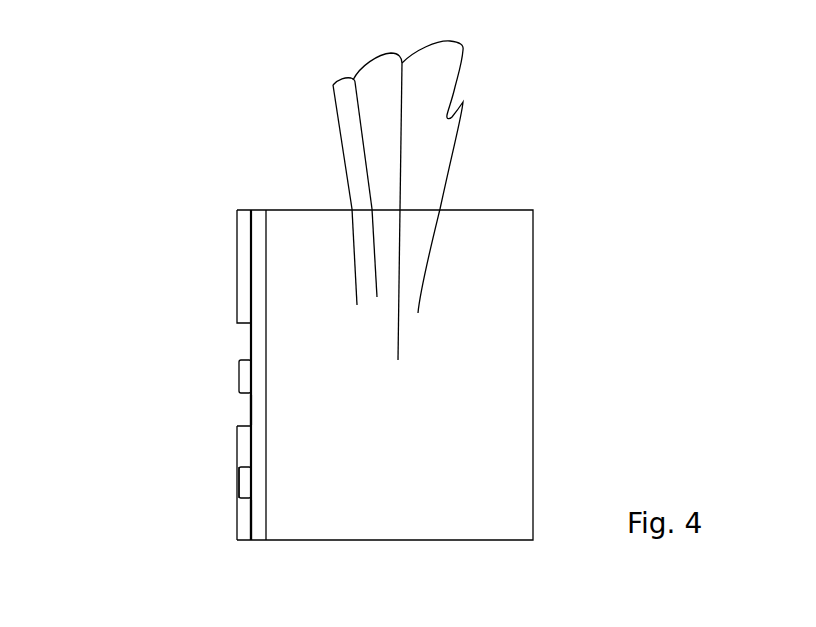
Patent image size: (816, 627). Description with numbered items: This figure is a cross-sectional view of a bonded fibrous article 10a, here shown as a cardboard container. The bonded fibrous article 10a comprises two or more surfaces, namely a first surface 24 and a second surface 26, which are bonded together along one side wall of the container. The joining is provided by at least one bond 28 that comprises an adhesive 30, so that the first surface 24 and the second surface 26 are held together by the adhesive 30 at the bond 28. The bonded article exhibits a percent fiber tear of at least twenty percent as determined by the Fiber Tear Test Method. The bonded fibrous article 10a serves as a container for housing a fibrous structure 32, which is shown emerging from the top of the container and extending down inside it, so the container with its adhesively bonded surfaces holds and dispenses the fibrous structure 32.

The bonded fibrous article 10a is at (580, 307).
The first surface 24 is at (253, 237).
The second surface 26 is at (251, 409).
The bond 28 is at (238, 486).
The adhesive 30 is at (239, 373).
The fibrous structure 32 is at (427, 110).